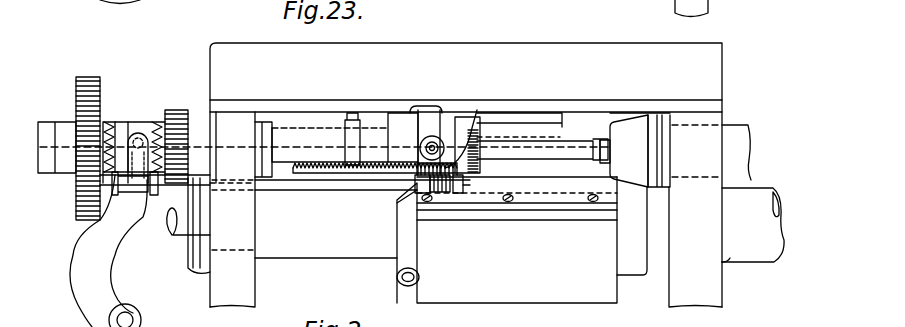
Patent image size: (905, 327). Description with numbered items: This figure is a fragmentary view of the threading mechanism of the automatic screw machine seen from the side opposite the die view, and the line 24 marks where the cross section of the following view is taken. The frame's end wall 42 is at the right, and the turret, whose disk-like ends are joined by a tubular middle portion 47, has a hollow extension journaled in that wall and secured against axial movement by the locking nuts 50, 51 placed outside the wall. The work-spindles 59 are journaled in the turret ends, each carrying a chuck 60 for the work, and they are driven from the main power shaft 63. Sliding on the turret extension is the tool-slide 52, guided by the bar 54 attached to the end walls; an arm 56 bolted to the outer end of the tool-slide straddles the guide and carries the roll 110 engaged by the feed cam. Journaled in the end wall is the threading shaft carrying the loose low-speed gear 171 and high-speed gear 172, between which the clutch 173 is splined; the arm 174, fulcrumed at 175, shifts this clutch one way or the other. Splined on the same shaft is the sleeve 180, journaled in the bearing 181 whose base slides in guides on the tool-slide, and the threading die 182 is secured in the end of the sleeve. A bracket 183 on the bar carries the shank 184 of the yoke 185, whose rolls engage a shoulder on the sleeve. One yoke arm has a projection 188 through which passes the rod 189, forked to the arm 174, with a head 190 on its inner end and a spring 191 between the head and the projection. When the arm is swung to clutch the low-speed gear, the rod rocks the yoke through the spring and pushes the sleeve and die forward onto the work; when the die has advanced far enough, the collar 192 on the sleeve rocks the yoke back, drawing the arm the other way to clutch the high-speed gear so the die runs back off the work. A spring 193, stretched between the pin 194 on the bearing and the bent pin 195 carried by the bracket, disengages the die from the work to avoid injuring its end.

The section line 24— 24 is at (543, 137).
The end wall 42 is at (220, 297).
The tubular middle portion 47 is at (760, 195).
The locking nut 50 is at (198, 204).
The locking nut 51 is at (192, 263).
The tool-slide 52 is at (562, 293).
The bar 54 is at (377, 114).
The arm 56 is at (400, 222).
The work-spindle 59 is at (735, 128).
The chuck 60 is at (632, 126).
The main power shaft 63 is at (181, 234).
The roll 110 is at (400, 272).
The low-speed gear 171 is at (86, 77).
The high-speed gear 172 is at (172, 111).
The clutch 173 is at (120, 123).
The arm 174 is at (98, 245).
The fulcrum 175 is at (122, 318).
The sleeve 180 is at (325, 132).
The bearing 181 is at (450, 120).
The threading die 182 is at (478, 319).
The bracket 183 is at (443, 137).
The shank 184 is at (420, 147).
The yoke 185 is at (427, 132).
The projection 188 is at (417, 188).
The rod 189 is at (330, 183).
The head 190 is at (460, 197).
The spring 191 is at (442, 197).
The collar 192 is at (358, 122).
The spring 193 is at (318, 173).
The pin 194 is at (480, 185).
The pin 195 is at (317, 177).